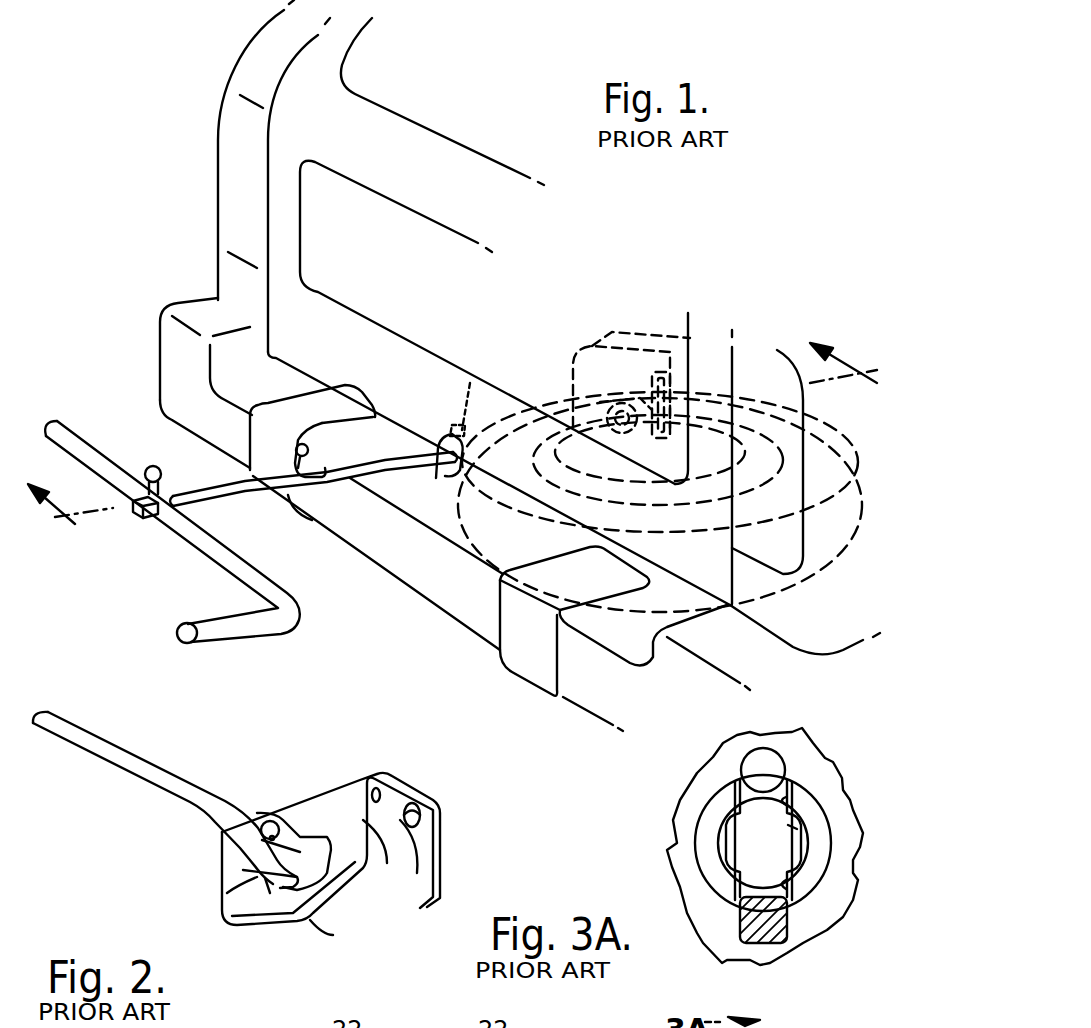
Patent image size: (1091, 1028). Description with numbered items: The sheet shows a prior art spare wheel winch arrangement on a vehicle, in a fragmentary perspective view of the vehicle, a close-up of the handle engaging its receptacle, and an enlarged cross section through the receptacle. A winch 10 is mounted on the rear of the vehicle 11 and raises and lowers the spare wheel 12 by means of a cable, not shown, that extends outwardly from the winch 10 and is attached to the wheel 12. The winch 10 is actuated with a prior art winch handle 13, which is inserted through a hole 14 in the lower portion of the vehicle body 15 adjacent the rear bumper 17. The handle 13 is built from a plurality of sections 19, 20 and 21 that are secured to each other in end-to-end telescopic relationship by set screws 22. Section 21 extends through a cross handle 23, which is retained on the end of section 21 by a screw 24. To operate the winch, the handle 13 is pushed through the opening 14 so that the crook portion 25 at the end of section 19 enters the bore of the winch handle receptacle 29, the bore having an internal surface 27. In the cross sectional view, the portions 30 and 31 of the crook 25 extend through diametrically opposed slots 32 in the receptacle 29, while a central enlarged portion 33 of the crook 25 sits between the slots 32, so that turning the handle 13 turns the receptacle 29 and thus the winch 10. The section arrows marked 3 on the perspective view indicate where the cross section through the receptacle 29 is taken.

In FIG. 1, the winch 10 is at (613, 352).
In FIG. 2, the winch 10 is at (410, 787).
In FIG. 3A, the winch 10 is at (820, 760).
In FIG. 1, the vehicle 11 is at (216, 175).
In FIG. 1, the spare wheel 12 is at (788, 587).
In FIG. 1, the winch handle 13 is at (212, 492).
In FIG. 2, the winch handle 13 is at (86, 729).
In FIG. 1, the hole 14 is at (423, 440).
In FIG. 1, the vehicle body 15 is at (370, 335).
In FIG. 1, the rear bumper 17 is at (157, 352).
In FIG. 1, the handle section 19 is at (508, 435).
In FIG. 1, the handle section 20 is at (392, 470).
In FIG. 1, the handle section 21 is at (225, 480).
In FIG. 1, the set screws 22 is at (324, 426).
In FIG. 1, the cross handle 23 is at (225, 563).
In FIG. 1, the screw 24 is at (150, 466).
In FIG. 2, the crook portion 25 is at (243, 870).
In FIG. 3A, the crook portion 25 is at (787, 940).
In FIG. 2, the internal surface 27 is at (300, 843).
In FIG. 3A, the internal surface 27 is at (737, 840).
In FIG. 1, the winch handle receptacle 29 is at (622, 400).
In FIG. 2, the winch handle receptacle 29 is at (317, 823).
In FIG. 3A, the winch handle receptacle 29 is at (718, 813).
In FIG. 2, the portion of crook 30 is at (263, 813).
In FIG. 3A, the portion of crook 30 is at (767, 752).
In FIG. 2, the portion of crook 31 is at (222, 912).
In FIG. 3A, the portion of crook 31 is at (770, 970).
In FIG. 2, the slots 32 is at (273, 880).
In FIG. 3A, the slots 32 is at (787, 800).
In FIG. 3A, the central enlarged portion 33 is at (793, 827).
In FIG. 1, the section line 3 is at (455, 451).